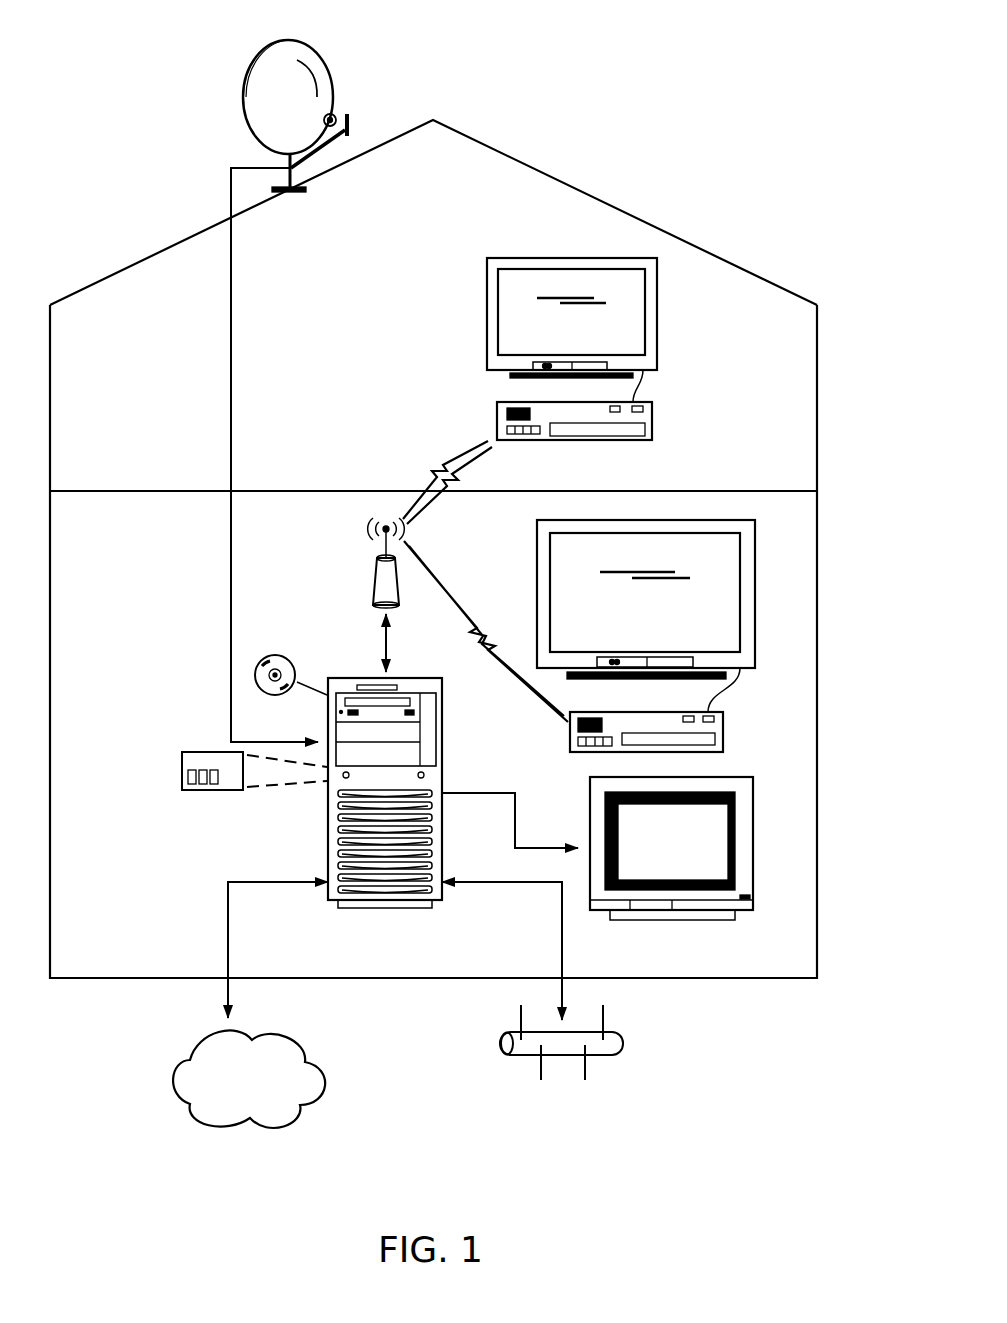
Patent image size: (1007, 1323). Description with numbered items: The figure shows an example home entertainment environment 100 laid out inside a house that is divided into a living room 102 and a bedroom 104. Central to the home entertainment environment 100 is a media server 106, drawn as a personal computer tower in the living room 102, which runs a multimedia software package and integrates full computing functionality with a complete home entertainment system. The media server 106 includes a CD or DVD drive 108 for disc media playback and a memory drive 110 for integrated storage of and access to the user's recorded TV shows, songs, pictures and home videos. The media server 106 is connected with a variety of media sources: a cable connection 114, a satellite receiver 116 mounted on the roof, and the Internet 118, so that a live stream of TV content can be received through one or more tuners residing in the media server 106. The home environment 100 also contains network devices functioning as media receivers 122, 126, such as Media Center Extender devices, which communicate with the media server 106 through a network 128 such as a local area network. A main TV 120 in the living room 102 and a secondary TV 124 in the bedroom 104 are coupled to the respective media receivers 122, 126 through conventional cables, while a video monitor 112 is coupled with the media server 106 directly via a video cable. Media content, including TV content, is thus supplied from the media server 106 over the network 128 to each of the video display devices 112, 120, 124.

The home entertainment environment 100 is at (650, 122).
The living room 102 is at (735, 979).
The bedroom 104 is at (190, 236).
The media server 106 is at (350, 698).
The CD or DVD drive 108 is at (370, 703).
The memory drive 110 is at (182, 770).
The video monitor 112 is at (753, 848).
The cable connection 114 is at (625, 1042).
The satellite receiver 116 is at (273, 65).
The Internet 118 is at (168, 1080).
The main TV 120 is at (755, 600).
The media receiver 122 is at (723, 732).
The secondary TV 124 is at (556, 258).
The media receiver 126 is at (652, 428).
The network 128 is at (374, 586).